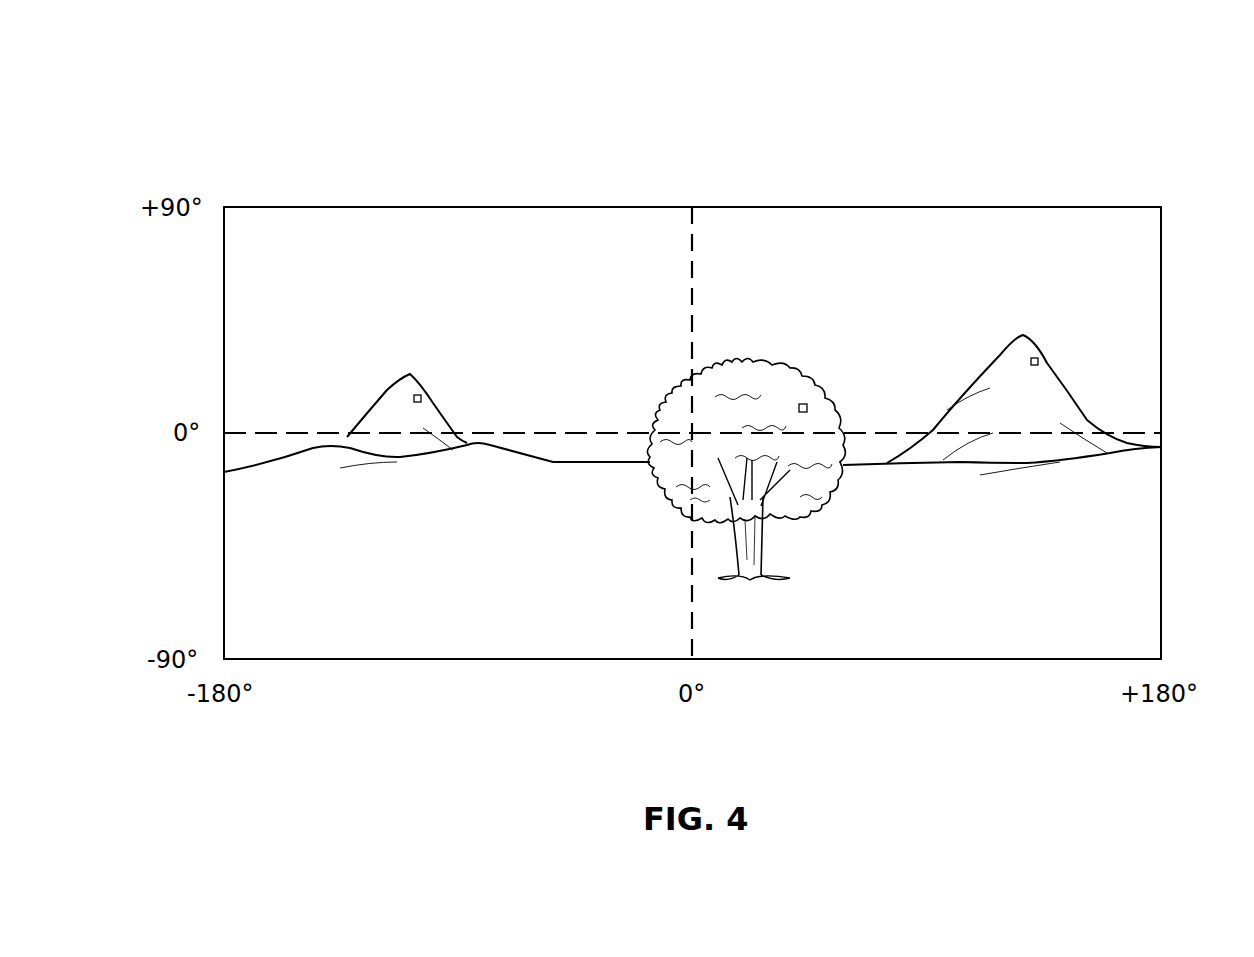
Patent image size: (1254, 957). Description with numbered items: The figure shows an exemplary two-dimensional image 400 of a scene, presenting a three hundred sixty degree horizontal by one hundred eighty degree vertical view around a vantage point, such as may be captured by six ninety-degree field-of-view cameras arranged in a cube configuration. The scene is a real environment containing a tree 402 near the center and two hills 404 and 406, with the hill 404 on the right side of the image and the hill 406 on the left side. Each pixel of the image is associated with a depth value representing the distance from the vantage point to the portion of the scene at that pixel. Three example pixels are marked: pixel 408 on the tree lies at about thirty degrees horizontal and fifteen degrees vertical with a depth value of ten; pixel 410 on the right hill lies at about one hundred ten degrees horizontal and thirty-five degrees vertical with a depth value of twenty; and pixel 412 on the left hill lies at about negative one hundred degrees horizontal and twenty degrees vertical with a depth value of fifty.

The 2D image 400 is at (1125, 95).
The tree 402 is at (772, 363).
The hill 404 is at (1002, 358).
The hill 406 is at (392, 392).
The pixel 408 is at (808, 404).
The pixel 410 is at (1034, 357).
The pixel 412 is at (417, 393).